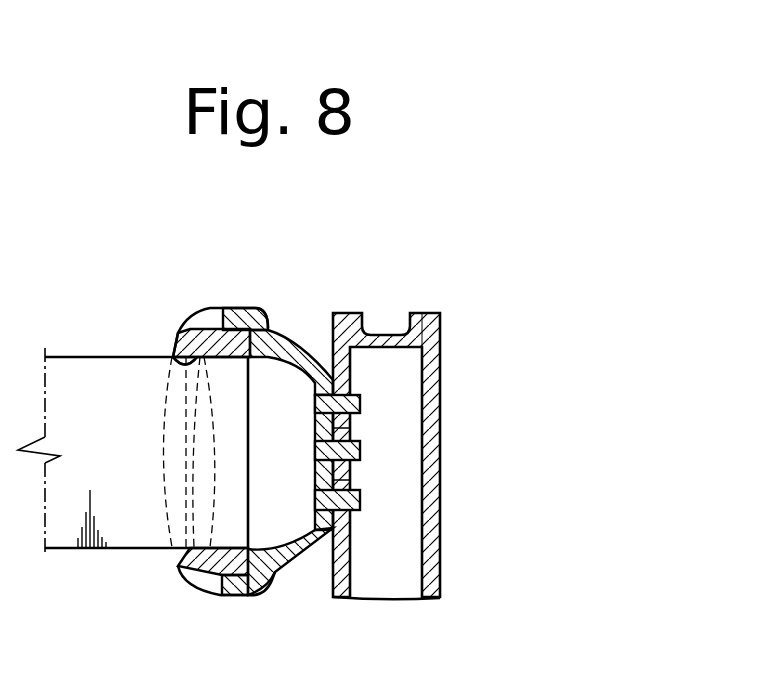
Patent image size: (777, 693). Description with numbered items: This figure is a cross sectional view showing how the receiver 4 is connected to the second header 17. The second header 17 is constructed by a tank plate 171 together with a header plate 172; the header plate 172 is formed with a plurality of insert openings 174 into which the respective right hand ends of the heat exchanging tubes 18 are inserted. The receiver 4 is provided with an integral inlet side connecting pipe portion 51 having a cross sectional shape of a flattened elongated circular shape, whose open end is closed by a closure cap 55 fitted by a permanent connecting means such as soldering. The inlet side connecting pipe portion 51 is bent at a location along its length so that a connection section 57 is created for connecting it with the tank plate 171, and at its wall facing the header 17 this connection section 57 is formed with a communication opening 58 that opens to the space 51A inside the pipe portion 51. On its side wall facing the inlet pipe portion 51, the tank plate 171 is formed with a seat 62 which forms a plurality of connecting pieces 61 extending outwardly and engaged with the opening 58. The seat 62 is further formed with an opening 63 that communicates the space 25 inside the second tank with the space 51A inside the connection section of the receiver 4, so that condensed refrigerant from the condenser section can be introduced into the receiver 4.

The receiver 4 is at (452, 338).
The second header 17 is at (180, 296).
The heat exchanging tubes 18 is at (97, 366).
The space inside the second tank 25 is at (266, 540).
The inlet side connecting pipe portion 51 is at (440, 384).
The space inside the pipe portion 51A is at (405, 550).
The closure cap 55 is at (428, 312).
The connection section 57 is at (337, 347).
The communication opening 58 is at (350, 483).
The connecting pieces 61 is at (360, 402).
The seat 62 is at (326, 562).
The opening 63 is at (350, 428).
The tank plate 171 is at (292, 568).
The header plate 172 is at (189, 598).
The insert openings 174 is at (178, 362).